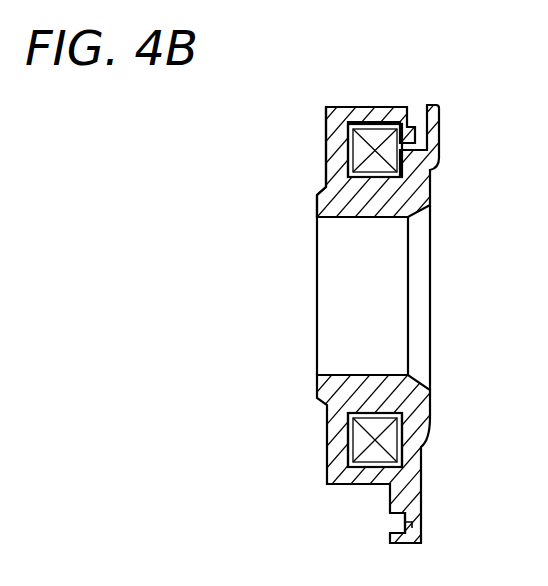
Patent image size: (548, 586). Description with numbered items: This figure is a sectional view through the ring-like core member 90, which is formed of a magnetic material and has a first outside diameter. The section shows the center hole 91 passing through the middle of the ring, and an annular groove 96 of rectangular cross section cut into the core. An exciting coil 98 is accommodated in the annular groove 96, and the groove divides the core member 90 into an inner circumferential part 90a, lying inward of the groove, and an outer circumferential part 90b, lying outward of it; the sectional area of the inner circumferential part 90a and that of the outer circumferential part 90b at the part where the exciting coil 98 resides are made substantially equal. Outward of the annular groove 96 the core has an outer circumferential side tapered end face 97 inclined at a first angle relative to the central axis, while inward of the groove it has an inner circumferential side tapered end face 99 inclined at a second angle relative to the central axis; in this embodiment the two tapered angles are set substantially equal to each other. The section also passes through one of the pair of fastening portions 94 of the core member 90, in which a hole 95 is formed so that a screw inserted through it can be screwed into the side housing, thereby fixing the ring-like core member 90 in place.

The ring-like core member 90 is at (274, 293).
The inner circumferential part 90a is at (322, 203).
The outer circumferential part 90b is at (369, 107).
The center hole 91 is at (370, 218).
The fastening portion 94 is at (390, 533).
The hole 95 is at (418, 521).
The annular groove 96 is at (352, 462).
The outer circumferential side tapered end face 97 is at (327, 116).
The exciting coil 98 is at (362, 155).
The inner circumferential side tapered end face 99 is at (333, 408).